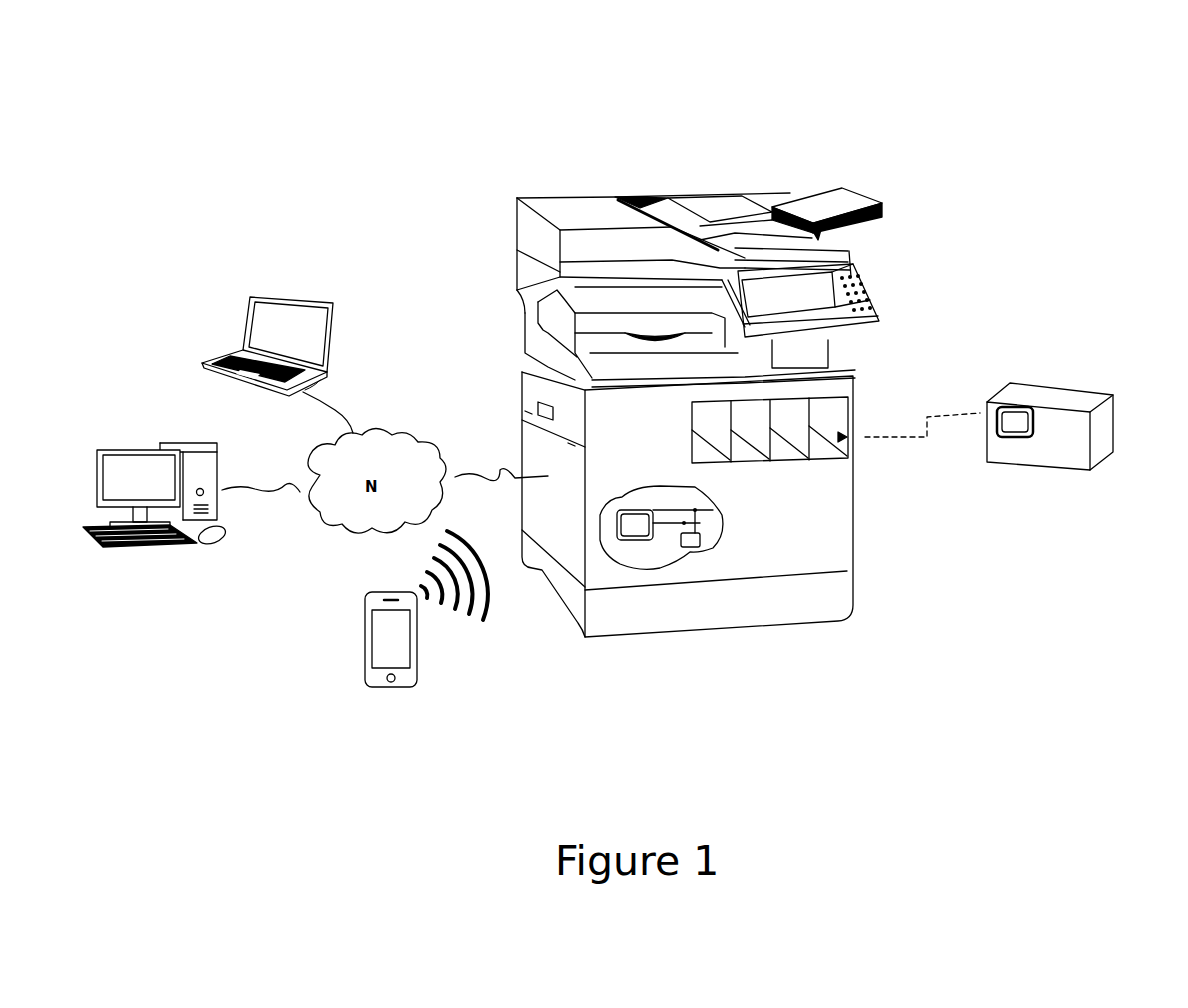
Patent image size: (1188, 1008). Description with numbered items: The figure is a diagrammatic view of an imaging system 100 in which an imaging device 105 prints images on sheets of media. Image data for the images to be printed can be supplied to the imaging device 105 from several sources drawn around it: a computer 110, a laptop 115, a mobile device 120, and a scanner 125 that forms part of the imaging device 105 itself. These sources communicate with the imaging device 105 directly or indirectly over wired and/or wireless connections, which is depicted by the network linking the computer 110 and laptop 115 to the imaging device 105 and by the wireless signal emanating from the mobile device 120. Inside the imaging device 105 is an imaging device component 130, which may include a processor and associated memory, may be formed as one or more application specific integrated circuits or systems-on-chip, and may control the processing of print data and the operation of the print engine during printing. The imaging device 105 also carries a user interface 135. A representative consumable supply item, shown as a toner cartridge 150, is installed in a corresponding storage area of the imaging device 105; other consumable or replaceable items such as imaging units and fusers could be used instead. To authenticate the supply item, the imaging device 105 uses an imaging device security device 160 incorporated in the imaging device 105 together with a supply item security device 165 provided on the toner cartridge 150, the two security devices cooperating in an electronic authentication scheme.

The imaging system 100 is at (980, 80).
The imaging device 105 is at (549, 180).
The computer 110 is at (172, 443).
The laptop 115 is at (281, 296).
The mobile device 120 is at (363, 634).
The scanner 125 is at (517, 226).
The imaging device component 130 is at (640, 508).
The user interface 135 is at (868, 278).
The toner cartridge 150 is at (1100, 392).
The imaging device security device 160 is at (702, 542).
The supply item security device 165 is at (1027, 412).